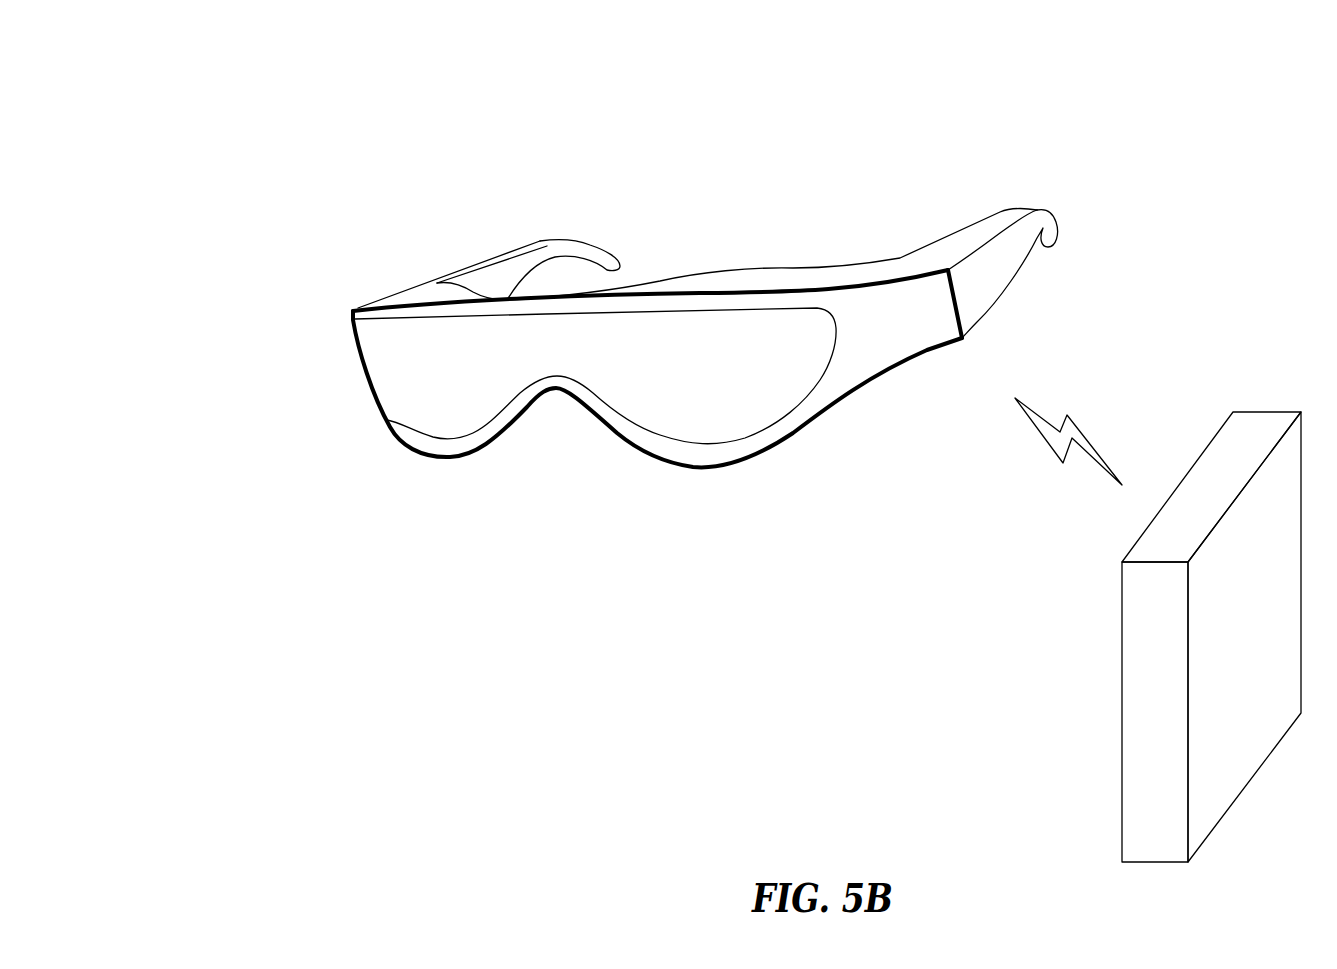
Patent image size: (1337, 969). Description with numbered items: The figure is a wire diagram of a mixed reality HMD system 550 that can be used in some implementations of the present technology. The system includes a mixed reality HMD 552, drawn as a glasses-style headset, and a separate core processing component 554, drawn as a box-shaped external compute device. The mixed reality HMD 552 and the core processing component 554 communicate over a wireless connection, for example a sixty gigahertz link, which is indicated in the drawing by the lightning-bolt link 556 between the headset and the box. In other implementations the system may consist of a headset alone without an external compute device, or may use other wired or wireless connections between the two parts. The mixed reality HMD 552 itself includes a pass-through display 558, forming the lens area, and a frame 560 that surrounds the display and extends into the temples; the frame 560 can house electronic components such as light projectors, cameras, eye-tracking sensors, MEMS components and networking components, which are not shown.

The mixed reality HMD system 550 is at (314, 125).
The mixed reality HMD 552 is at (352, 321).
The core processing component 554 is at (1122, 639).
The link 556 is at (1058, 456).
The pass-through display 558 is at (832, 313).
The frame 560 is at (987, 278).